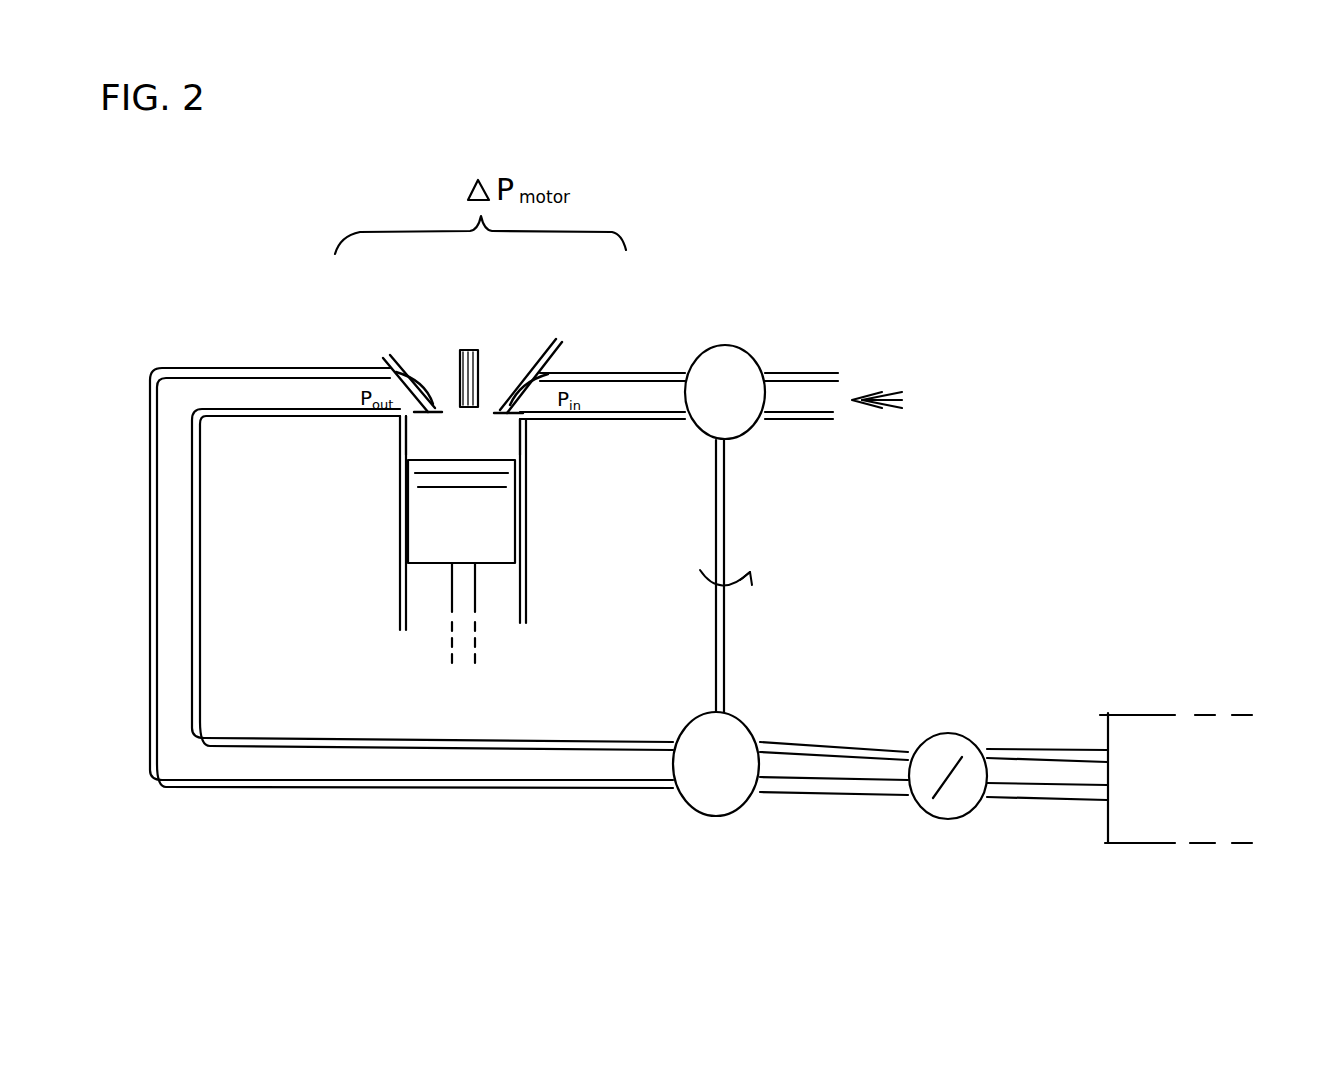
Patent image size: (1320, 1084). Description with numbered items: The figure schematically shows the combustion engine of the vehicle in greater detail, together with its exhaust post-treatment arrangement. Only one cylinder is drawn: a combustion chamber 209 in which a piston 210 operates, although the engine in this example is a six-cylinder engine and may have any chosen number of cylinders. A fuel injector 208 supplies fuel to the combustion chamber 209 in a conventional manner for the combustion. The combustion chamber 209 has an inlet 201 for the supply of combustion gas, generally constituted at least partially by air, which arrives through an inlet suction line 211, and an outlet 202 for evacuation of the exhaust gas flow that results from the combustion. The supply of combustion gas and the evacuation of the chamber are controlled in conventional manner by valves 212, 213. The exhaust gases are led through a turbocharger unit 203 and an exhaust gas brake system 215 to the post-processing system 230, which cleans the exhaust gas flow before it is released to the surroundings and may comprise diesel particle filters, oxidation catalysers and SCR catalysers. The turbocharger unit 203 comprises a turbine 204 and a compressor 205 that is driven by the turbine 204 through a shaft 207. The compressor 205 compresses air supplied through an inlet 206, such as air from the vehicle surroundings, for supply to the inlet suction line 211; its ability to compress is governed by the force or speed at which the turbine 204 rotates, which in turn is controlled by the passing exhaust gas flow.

The inlet 201 is at (502, 407).
The outlet 202 is at (427, 390).
The turbocharger unit 203 is at (765, 650).
The turbine 204 is at (712, 820).
The compressor 205 is at (765, 355).
The inlet 206 is at (780, 397).
The shaft 207 is at (723, 567).
The fuel injector 208 is at (468, 413).
The combustion chamber 209 is at (400, 445).
The piston 210 is at (433, 550).
The inlet suction line 211 is at (640, 392).
The valve 212 is at (530, 390).
The valve 213 is at (380, 360).
The exhaust gas brake system 215 is at (937, 820).
The post-processing system 230 is at (1153, 713).